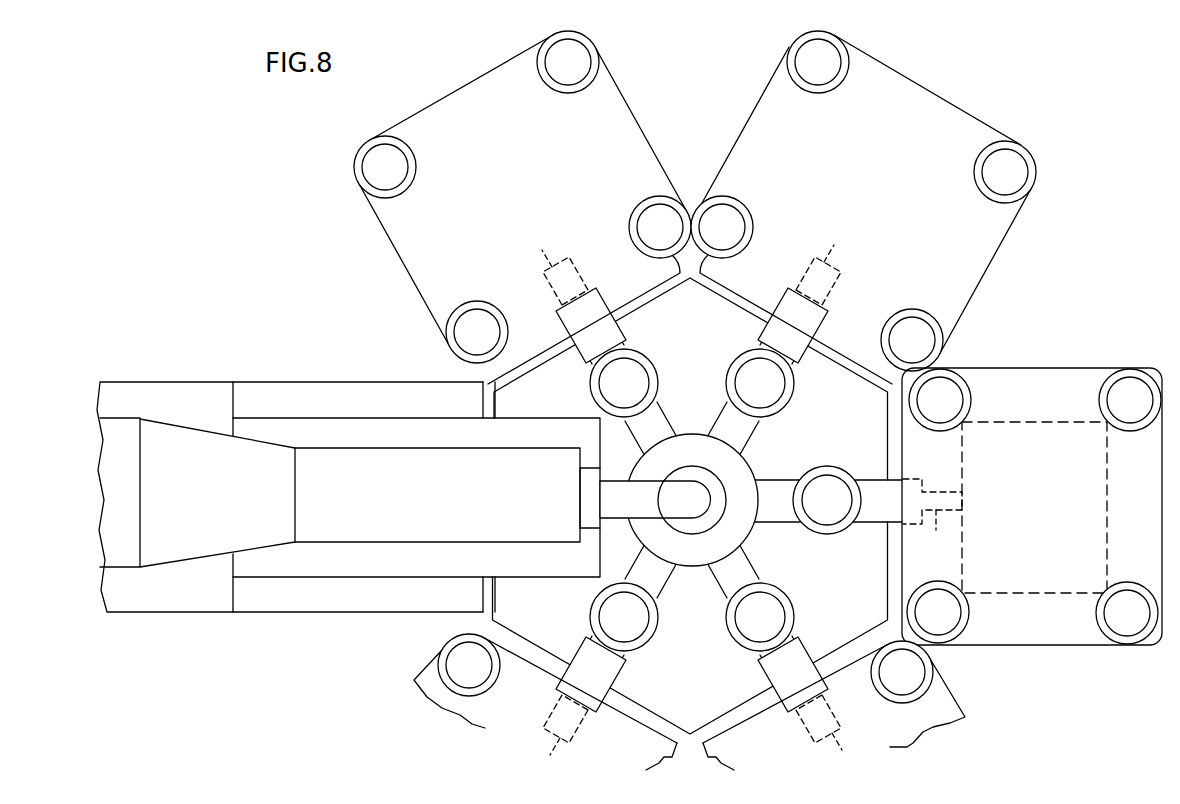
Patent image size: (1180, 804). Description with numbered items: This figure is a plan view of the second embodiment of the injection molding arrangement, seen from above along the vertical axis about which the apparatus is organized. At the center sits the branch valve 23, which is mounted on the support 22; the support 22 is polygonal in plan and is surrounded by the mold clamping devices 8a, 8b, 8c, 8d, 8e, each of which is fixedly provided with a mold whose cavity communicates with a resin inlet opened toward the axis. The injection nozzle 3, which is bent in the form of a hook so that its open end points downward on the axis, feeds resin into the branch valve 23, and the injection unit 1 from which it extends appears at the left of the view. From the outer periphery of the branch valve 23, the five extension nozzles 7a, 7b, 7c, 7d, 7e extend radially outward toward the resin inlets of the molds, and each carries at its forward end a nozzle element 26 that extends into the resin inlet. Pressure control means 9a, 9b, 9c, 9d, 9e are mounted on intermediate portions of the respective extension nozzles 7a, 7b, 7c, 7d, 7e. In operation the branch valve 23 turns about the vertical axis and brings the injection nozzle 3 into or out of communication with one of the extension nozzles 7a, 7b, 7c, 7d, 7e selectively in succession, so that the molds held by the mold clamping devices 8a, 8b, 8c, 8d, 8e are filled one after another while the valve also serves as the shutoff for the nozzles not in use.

The hydraulic cylinder 1 is at (372, 532).
The injection nozzle 3 is at (658, 508).
The extension nozzle 7a is at (603, 665).
The extension nozzle 7b is at (798, 648).
The extension nozzle 7c is at (866, 488).
The extension nozzle 7d is at (780, 328).
The extension nozzle 7e is at (592, 340).
The mold clamping device 8a is at (484, 732).
The mold clamping device 8b is at (728, 786).
The mold clamping device 8c is at (1012, 626).
The mold clamping device 8d is at (978, 270).
The mold clamping device 8e is at (630, 136).
The pressure control means 9a is at (590, 626).
The pressure control means 9b is at (734, 645).
The pressure control means 9c is at (830, 532).
The pressure control means 9d is at (796, 382).
The pressure control means 9e is at (660, 372).
The support 22 is at (632, 692).
The branch valve 23 is at (742, 535).
The nozzle element 26 is at (568, 268).